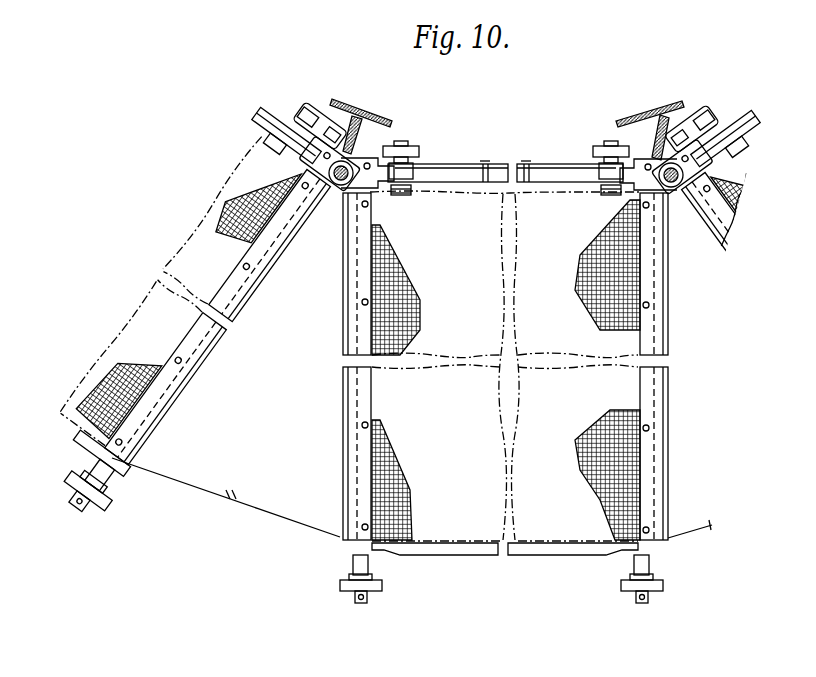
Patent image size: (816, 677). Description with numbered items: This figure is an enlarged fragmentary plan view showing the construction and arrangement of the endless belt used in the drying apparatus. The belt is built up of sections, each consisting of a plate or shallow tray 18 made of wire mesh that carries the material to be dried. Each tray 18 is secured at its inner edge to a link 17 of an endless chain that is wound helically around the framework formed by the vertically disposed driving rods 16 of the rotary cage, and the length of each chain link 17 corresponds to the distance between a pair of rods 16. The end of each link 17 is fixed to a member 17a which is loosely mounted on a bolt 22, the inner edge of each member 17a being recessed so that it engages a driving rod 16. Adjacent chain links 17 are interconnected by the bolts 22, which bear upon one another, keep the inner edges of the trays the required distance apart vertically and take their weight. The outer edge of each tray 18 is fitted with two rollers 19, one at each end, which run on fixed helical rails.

The rods 16 is at (362, 148).
The chain links 17 is at (260, 105).
The member 17a is at (352, 148).
The tray 18 is at (405, 527).
The rollers 19 is at (345, 584).
The bolt 22 is at (337, 186).